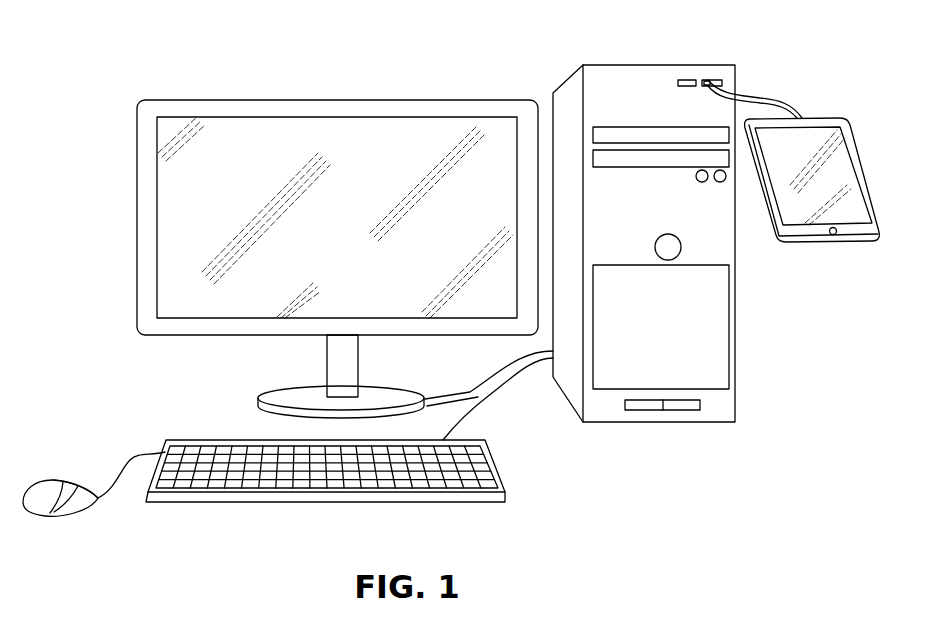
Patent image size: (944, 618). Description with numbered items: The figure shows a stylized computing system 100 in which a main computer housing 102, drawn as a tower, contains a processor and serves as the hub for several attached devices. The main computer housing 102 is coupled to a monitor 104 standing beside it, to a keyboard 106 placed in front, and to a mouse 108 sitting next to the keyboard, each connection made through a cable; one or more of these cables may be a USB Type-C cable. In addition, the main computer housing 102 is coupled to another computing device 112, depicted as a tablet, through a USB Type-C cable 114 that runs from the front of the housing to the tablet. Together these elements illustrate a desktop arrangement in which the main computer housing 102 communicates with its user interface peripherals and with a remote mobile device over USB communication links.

The computing system 100 is at (193, 82).
The main computer housing 102 is at (722, 405).
The monitor 104 is at (342, 100).
The keyboard 106 is at (463, 497).
The mouse 108 is at (87, 508).
The computing device 112 is at (813, 133).
The USB Type-C cable 114 is at (750, 97).